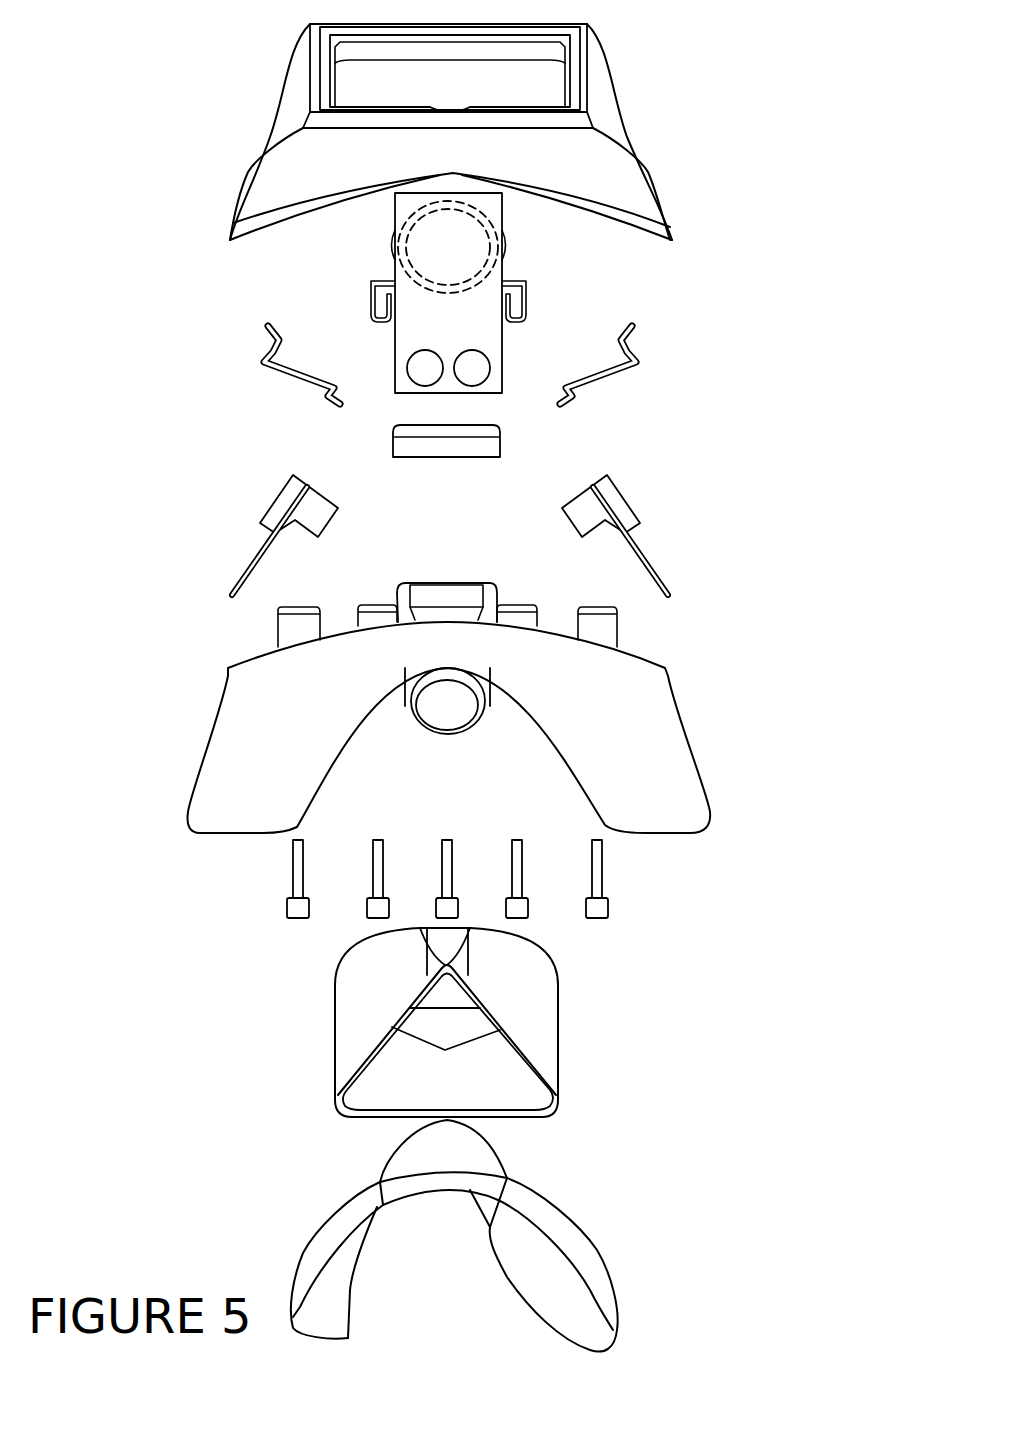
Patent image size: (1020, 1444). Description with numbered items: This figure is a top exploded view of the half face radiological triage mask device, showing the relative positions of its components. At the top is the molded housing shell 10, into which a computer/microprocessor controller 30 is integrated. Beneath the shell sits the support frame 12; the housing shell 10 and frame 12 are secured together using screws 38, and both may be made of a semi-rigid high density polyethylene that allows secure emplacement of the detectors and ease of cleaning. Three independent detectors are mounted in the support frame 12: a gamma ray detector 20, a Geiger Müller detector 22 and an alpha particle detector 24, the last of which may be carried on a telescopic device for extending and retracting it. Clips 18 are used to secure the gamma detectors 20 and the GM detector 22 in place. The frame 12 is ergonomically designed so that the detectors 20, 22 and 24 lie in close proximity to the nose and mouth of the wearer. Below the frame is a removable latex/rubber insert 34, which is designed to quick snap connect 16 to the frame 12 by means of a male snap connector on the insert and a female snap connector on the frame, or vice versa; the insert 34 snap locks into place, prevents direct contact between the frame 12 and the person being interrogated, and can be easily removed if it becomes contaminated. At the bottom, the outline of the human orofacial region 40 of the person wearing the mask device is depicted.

The housing shell 10 is at (352, 168).
The support frame 12 is at (647, 758).
The quick snap connect 16 is at (427, 252).
The clips 18 is at (292, 363).
The gamma ray detector 20 is at (283, 507).
The Geiger Müller detector 22 is at (490, 445).
The alpha particle detector 24 is at (468, 342).
The computer/microprocessor controller 30 is at (510, 81).
The removable latex/rubber insert 34 is at (430, 998).
The screws 38 is at (298, 870).
The human orofacial region 40 is at (578, 1248).